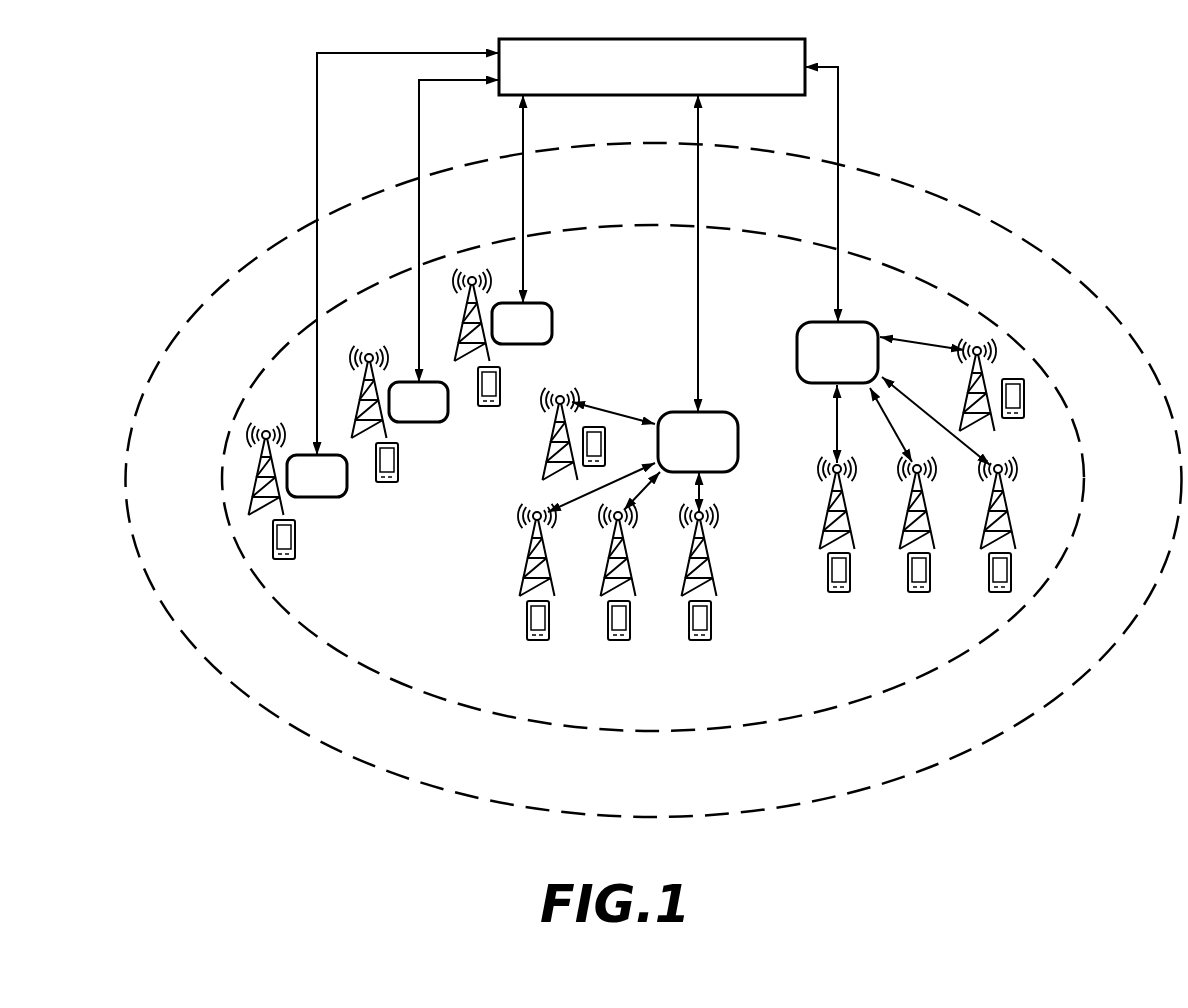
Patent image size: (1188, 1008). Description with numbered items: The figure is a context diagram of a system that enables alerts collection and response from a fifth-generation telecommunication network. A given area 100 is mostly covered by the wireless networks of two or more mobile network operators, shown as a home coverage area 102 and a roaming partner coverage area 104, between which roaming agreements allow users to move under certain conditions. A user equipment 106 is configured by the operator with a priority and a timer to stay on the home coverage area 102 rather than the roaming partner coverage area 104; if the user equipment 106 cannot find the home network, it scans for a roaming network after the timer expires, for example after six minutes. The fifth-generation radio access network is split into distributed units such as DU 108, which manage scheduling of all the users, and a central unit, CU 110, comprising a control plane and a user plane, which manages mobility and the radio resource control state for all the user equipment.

The area 100 is at (654, 410).
The home coverage area 102 is at (808, 687).
The roaming partner coverage area 104 is at (821, 773).
The user equipment 106 is at (295, 542).
The distributed unit 108 is at (345, 492).
The central unit 110 is at (748, 40).